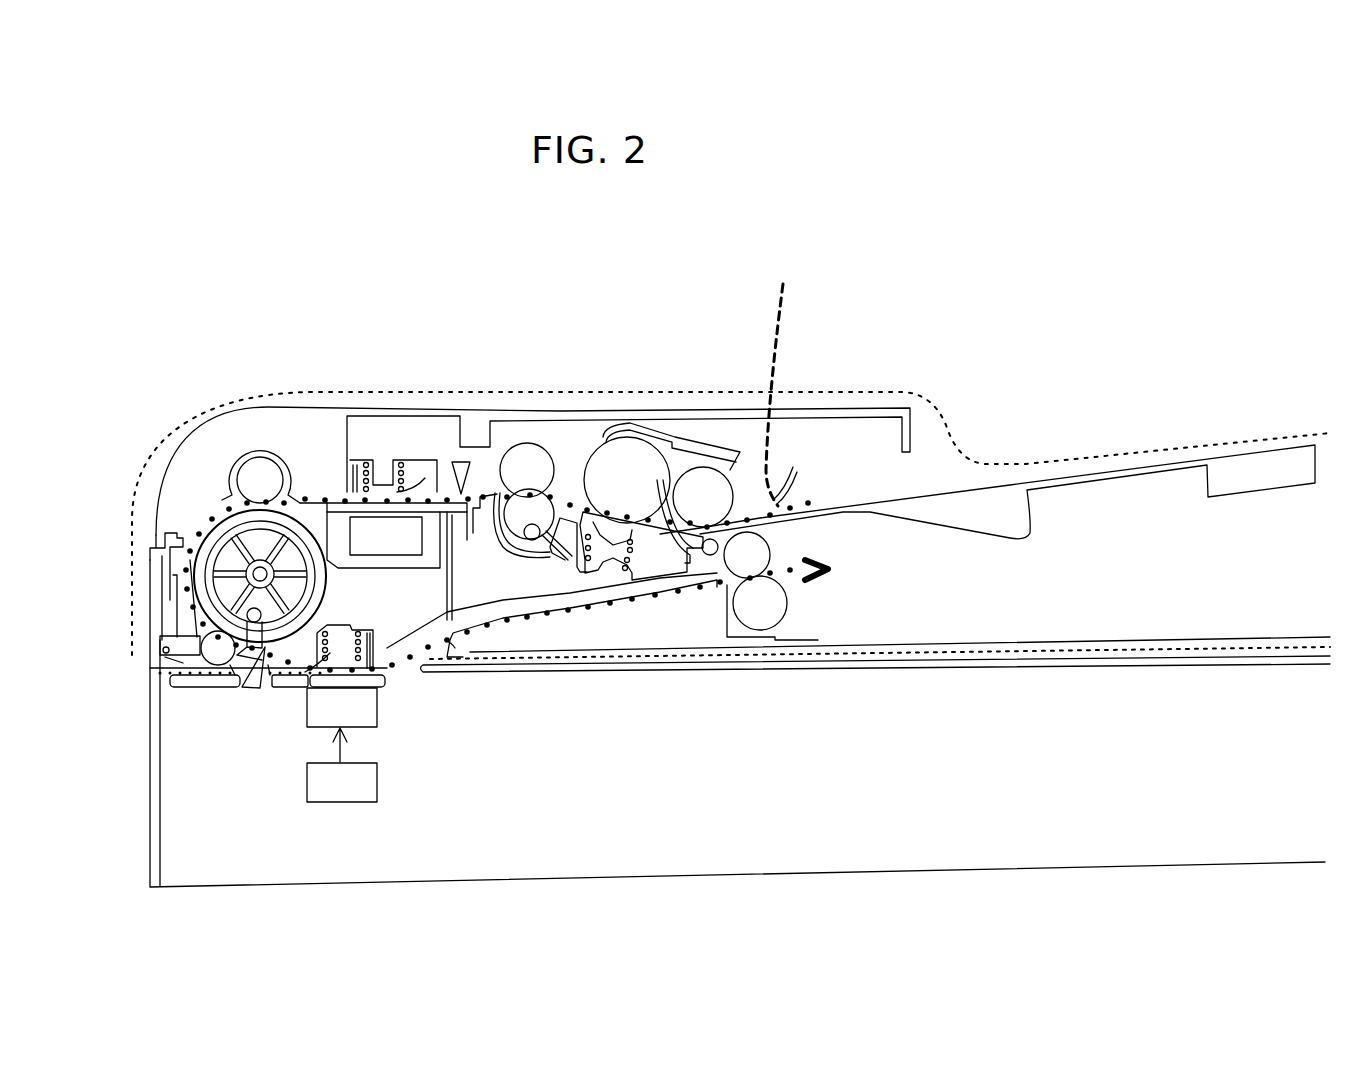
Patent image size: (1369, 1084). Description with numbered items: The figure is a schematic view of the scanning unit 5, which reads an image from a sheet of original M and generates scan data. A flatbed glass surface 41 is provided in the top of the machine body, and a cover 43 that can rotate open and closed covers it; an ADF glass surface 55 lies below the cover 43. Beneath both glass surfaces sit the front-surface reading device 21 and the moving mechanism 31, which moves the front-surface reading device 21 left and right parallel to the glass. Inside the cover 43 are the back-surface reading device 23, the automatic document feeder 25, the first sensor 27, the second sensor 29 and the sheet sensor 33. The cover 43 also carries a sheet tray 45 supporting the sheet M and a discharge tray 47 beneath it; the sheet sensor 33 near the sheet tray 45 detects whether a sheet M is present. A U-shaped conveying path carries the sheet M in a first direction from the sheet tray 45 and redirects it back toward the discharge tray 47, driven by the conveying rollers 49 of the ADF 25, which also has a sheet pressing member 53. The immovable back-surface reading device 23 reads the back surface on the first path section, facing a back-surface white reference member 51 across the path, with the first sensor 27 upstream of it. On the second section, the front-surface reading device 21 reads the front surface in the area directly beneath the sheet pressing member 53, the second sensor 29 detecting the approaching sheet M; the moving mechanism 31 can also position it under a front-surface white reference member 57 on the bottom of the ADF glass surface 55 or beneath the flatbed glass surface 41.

The scanning unit 5 is at (605, 250).
The front-surface reading device 21 is at (368, 717).
The back-surface reading device 23 is at (398, 545).
The automatic document feeder 25 is at (188, 483).
The first sensor 27 is at (465, 490).
The second sensor 29 is at (258, 683).
The moving mechanism 31 is at (334, 785).
The sheet sensor 33 is at (848, 550).
The flatbed glass surface 41 is at (1155, 648).
The cover 43 is at (868, 390).
The sheet tray 45 is at (1100, 473).
The discharge tray 47 is at (802, 637).
The conveying rollers 49 is at (272, 530).
The back-surface white reference member 51 is at (415, 470).
The sheet pressing member 53 is at (318, 630).
The ADF glass surface 55 is at (170, 680).
The front-surface white reference member 57 is at (287, 683).
The sheet of original M is at (781, 381).